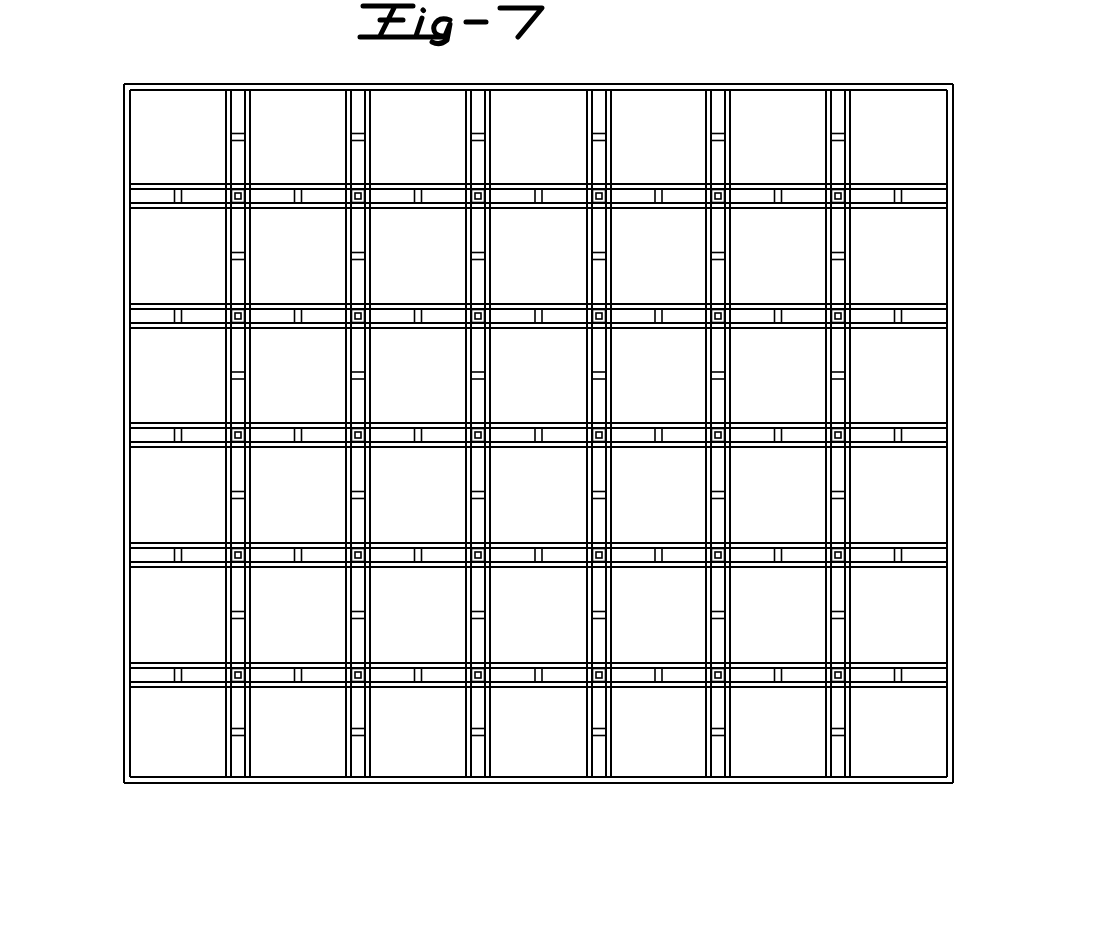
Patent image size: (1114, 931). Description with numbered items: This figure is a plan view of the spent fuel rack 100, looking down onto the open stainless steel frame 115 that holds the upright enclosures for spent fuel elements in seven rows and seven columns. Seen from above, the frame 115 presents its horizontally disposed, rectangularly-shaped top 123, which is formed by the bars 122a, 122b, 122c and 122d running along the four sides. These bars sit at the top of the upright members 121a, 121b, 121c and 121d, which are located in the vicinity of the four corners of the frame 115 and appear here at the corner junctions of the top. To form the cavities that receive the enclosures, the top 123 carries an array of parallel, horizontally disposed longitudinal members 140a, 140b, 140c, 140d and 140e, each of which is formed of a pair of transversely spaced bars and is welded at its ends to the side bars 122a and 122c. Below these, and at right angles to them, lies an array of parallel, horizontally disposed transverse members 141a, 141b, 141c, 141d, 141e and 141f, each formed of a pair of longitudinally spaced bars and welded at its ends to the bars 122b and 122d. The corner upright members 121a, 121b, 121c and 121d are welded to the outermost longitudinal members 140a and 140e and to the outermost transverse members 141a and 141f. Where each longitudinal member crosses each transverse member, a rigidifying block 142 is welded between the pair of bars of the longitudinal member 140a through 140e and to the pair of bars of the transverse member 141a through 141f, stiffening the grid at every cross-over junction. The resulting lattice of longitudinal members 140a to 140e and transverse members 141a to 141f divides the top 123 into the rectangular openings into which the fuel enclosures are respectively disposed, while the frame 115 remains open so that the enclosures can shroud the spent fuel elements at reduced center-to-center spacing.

The rack 100 is at (975, 463).
The open rack stainless steel frame 115 is at (953, 193).
The upright member 121a is at (233, 206).
The upright member 121b is at (233, 679).
The upright member 121c is at (847, 671).
The upright member 121d is at (843, 186).
The bar 122a is at (128, 367).
The bar 122b is at (330, 785).
The bar 122c is at (950, 282).
The bar 122d is at (547, 83).
The top 123 is at (123, 143).
The longitudinal member 140a is at (518, 663).
The longitudinal member 140b is at (523, 543).
The longitudinal member 140c is at (552, 410).
The longitudinal member 140d is at (540, 304).
The longitudinal member 140e is at (540, 173).
The transverse member 141a is at (251, 374).
The transverse member 141b is at (371, 374).
The transverse member 141c is at (491, 374).
The transverse member 141d is at (612, 374).
The transverse member 141e is at (731, 374).
The transverse member 141f is at (851, 374).
The rigidifying block 142 is at (715, 185).